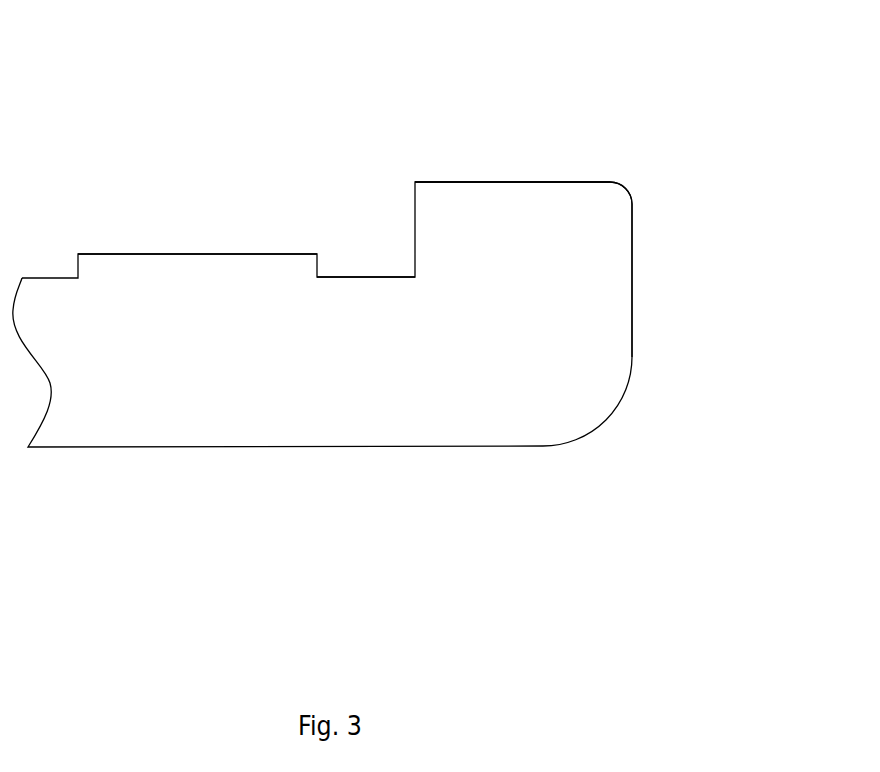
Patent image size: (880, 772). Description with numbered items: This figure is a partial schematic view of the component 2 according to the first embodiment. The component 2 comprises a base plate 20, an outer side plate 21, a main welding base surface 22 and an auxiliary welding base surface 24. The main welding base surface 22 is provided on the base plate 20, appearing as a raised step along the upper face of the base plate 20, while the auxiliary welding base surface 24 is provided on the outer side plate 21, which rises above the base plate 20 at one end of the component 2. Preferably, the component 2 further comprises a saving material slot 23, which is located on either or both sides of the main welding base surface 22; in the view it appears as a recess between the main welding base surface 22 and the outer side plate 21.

The component 2 is at (259, 97).
The base plate 20 is at (311, 412).
The outer side plate 21 is at (576, 248).
The main welding base surface 22 is at (179, 253).
The saving material slot 23 is at (363, 277).
The auxiliary welding base surface 24 is at (522, 182).